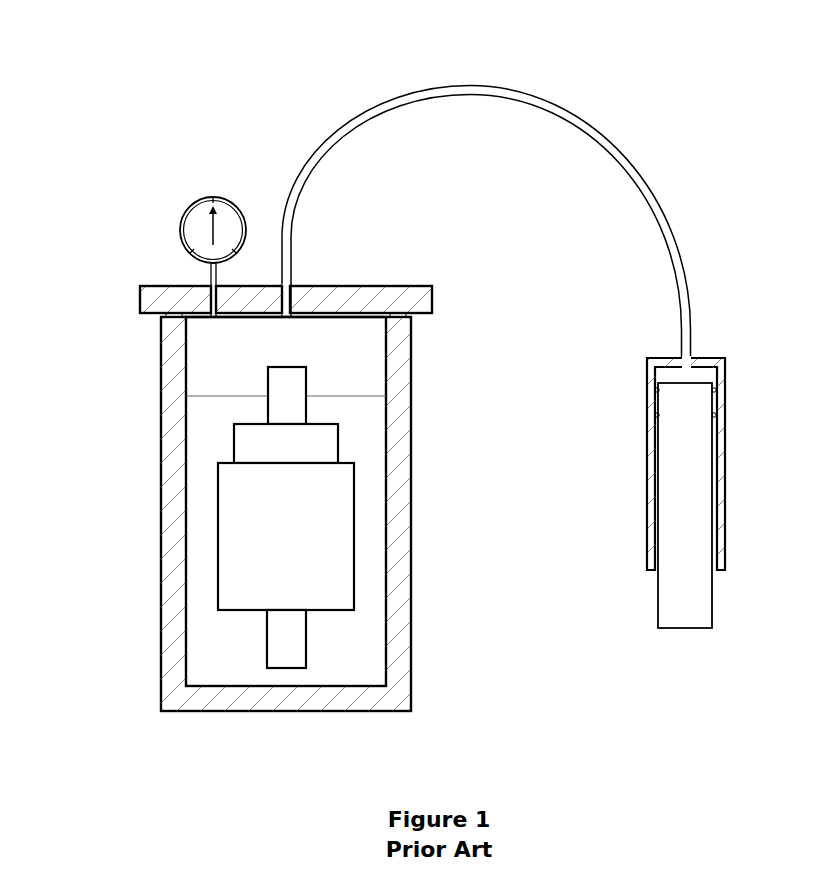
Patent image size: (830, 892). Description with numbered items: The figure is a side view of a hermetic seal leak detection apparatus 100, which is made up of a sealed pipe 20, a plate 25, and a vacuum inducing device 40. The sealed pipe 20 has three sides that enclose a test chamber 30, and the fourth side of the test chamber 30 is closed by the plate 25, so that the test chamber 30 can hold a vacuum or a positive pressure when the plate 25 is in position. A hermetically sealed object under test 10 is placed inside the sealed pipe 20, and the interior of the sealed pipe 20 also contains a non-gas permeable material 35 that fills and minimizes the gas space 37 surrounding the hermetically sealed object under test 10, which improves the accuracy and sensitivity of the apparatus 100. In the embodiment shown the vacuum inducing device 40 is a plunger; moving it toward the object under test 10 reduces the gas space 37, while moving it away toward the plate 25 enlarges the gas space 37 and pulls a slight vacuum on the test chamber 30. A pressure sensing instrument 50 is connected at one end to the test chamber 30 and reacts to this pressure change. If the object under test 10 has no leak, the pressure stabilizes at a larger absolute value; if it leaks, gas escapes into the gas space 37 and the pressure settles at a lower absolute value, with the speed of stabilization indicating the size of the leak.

The hermetic seal leak detection apparatus 100 is at (450, 25).
The hermetically sealed object under test 10 is at (232, 492).
The sealed pipe 20 is at (162, 615).
The plate 25 is at (154, 286).
The test chamber 30 is at (188, 632).
The non-gas permeable material 35 is at (360, 660).
The gas space 37 is at (213, 358).
The vacuum inducing device 40 is at (725, 439).
The pressure sensing instrument 50 is at (193, 203).